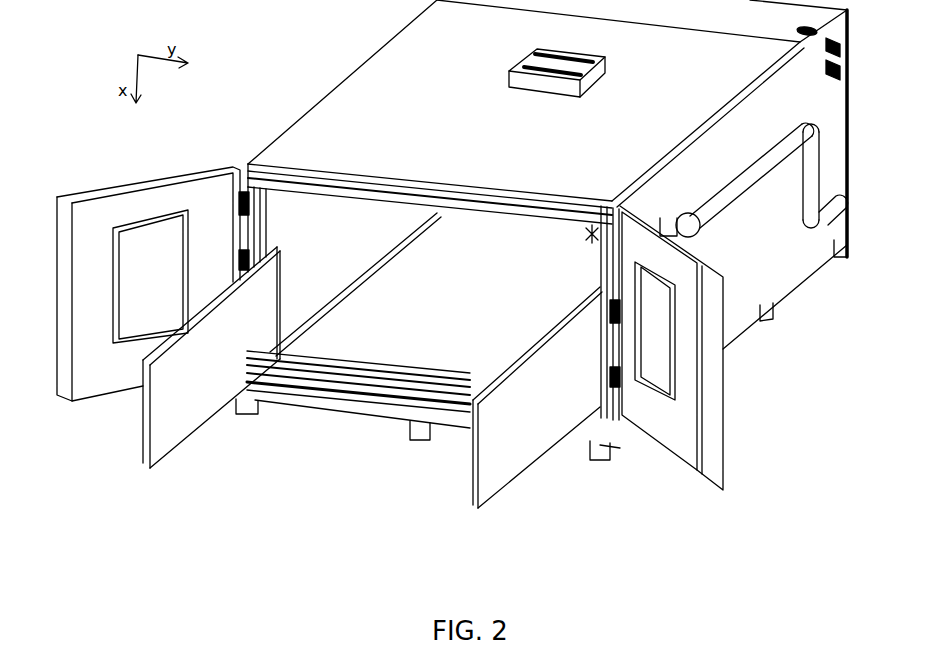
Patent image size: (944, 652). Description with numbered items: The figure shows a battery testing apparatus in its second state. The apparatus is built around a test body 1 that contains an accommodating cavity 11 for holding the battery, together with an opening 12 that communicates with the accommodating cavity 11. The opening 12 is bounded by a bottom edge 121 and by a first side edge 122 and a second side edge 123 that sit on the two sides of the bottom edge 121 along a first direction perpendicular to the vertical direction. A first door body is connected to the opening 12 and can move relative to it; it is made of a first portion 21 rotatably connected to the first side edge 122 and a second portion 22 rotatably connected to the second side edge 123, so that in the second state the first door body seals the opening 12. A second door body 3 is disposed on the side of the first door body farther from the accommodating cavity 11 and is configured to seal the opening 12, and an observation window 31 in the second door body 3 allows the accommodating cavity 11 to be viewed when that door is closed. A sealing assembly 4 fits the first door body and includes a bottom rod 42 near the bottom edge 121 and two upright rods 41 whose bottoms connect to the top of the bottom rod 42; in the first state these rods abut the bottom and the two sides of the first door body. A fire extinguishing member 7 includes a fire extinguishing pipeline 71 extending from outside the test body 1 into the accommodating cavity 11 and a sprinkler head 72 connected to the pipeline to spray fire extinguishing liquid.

The test body 1 is at (370, 57).
The second door body 3 is at (710, 407).
The observation window 31 is at (128, 325).
The sealing assembly 4 is at (358, 390).
The upright rod 41 is at (279, 273).
The bottom rod 42 is at (372, 358).
The fire extinguishing member 7 is at (708, 180).
The fire extinguishing pipeline 71 is at (662, 212).
The sprinkler head 72 is at (611, 212).
The accommodating cavity 11 is at (447, 300).
The opening 12 is at (410, 193).
The bottom edge 121 is at (376, 350).
The first side edge 122 is at (247, 166).
The second side edge 123 is at (585, 225).
The first portion 21 is at (234, 357).
The second portion 22 is at (507, 453).